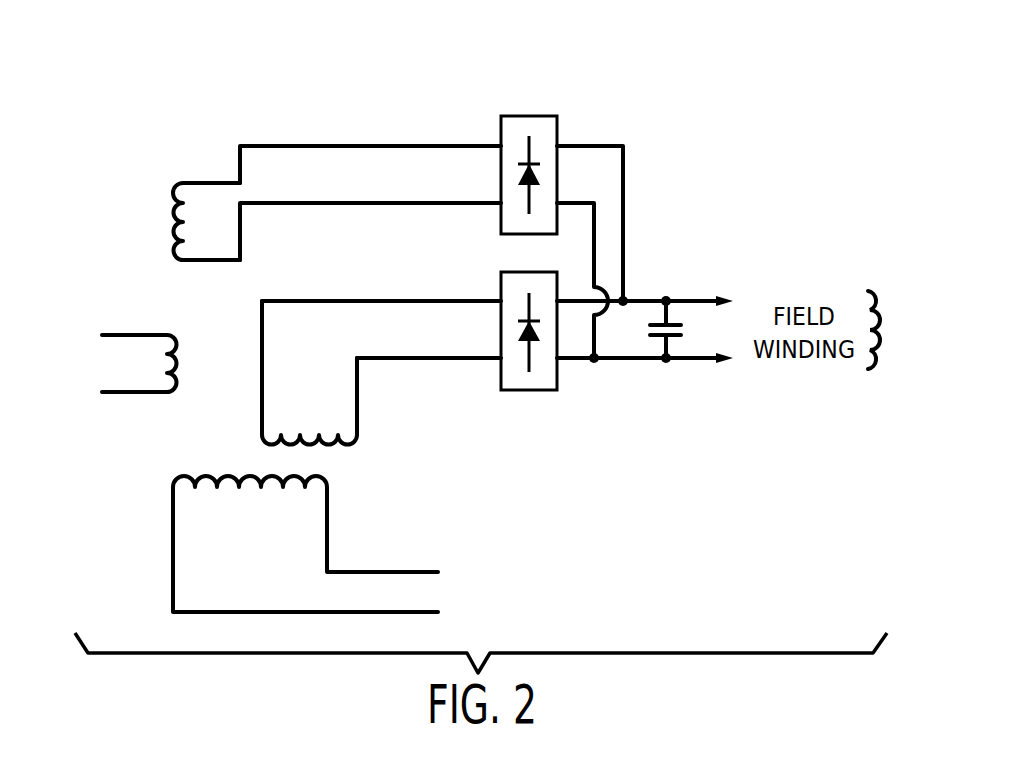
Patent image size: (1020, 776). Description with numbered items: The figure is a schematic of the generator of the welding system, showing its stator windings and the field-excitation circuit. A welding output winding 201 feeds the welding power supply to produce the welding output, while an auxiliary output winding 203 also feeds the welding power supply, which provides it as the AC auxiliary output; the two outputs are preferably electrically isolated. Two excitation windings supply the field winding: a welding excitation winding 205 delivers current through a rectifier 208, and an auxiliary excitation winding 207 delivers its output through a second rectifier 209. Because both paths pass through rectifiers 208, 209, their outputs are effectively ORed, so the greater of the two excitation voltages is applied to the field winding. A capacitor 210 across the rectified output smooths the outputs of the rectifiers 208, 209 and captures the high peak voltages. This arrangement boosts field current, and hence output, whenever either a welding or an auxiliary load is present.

The welding output winding 201 is at (177, 362).
The auxiliary output winding 203 is at (199, 478).
The welding excitation winding 205 is at (330, 442).
The auxiliary excitation winding 207 is at (173, 206).
The rectifier 208 is at (529, 391).
The rectifier 209 is at (528, 115).
The capacitor 210 is at (681, 336).